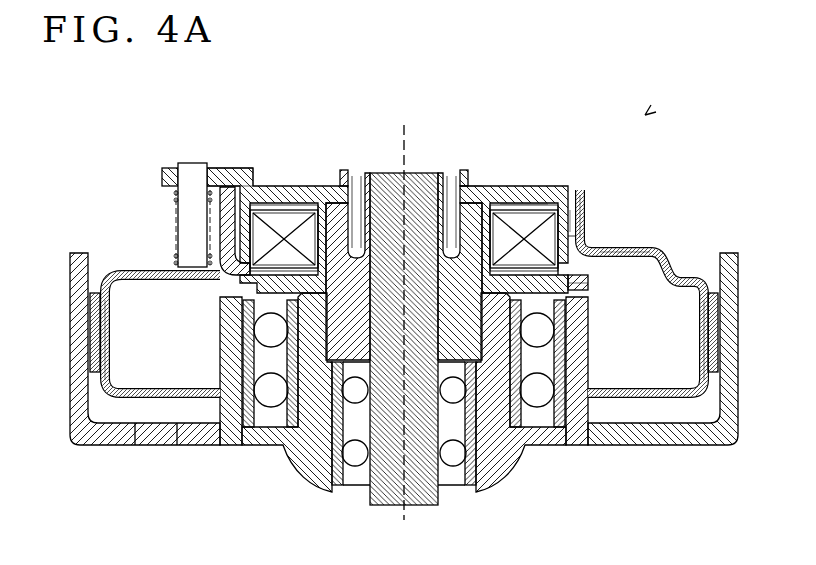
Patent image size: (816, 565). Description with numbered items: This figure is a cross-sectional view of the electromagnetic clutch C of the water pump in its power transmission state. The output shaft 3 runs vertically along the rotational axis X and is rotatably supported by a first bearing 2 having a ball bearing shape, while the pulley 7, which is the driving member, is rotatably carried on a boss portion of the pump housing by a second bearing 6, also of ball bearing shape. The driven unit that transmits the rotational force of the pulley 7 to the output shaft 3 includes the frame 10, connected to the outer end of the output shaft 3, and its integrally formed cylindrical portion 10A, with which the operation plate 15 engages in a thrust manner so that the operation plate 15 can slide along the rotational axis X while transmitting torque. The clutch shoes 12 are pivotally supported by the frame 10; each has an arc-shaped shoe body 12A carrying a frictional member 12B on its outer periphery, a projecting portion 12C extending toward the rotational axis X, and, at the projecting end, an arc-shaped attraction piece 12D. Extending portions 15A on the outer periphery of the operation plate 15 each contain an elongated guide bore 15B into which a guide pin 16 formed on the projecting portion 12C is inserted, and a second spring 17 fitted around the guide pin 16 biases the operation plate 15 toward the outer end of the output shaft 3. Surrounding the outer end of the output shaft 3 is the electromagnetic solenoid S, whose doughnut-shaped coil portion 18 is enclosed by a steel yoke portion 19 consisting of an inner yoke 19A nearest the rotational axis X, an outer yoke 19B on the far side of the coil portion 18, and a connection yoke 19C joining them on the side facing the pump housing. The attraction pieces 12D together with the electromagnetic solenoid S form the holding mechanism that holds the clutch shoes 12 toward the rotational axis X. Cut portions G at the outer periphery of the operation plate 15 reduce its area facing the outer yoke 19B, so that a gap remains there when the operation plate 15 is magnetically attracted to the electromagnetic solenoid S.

The electromagnetic clutch C is at (645, 115).
The rotational axis X is at (404, 310).
The first bearing 2 is at (455, 462).
The output shaft 3 is at (392, 488).
The second bearing 6 is at (268, 428).
The pulley 7 is at (730, 297).
The frame 10 is at (446, 170).
The cylindrical portion 10A is at (355, 172).
The clutch shoe 12 is at (119, 265).
The shoe body 12A is at (107, 332).
The frictional member 12B is at (95, 330).
The projecting portion 12C is at (634, 252).
The attraction piece 12D is at (580, 192).
The operation plate 15 is at (496, 195).
The extending portion 15A is at (160, 174).
The guide bore 15B is at (206, 166).
The guide pin 16 is at (195, 172).
The second spring 17 is at (175, 197).
The coil portion 18 is at (300, 217).
The yoke portion 19 is at (227, 275).
The inner yoke 19A is at (468, 185).
The outer yoke 19B is at (573, 240).
The connection yoke 19C is at (572, 290).
The cut portion G is at (540, 206).
The electromagnetic solenoid S is at (574, 222).